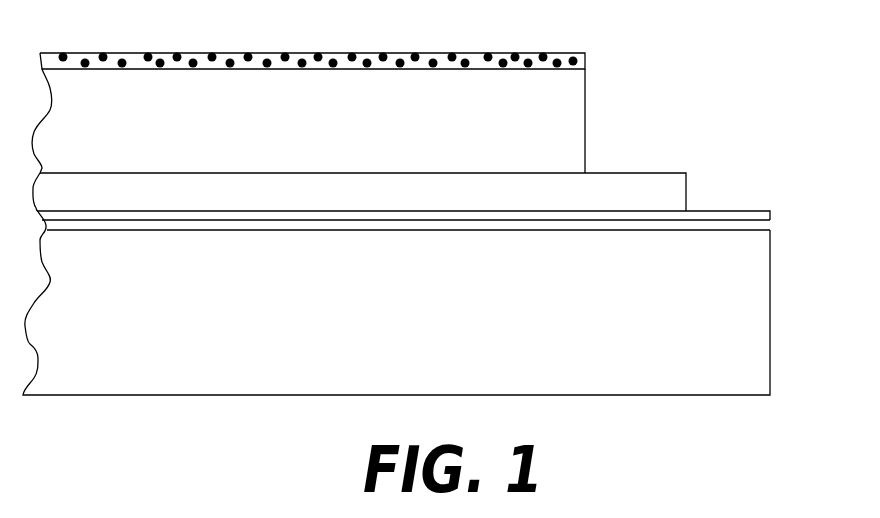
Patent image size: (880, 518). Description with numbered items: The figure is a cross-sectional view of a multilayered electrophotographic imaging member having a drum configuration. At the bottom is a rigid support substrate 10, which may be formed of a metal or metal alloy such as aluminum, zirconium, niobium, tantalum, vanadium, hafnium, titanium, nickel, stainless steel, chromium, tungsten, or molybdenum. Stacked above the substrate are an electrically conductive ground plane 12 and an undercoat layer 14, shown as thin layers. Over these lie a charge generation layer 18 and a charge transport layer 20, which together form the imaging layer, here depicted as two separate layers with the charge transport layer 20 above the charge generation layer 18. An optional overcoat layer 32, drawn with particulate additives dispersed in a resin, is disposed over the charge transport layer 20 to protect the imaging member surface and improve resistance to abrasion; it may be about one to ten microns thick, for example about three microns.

The rigid support substrate 10 is at (765, 337).
The electrically conductive ground plane 12 is at (768, 227).
The undercoat layer 14 is at (768, 220).
The charge generation layer 18 is at (683, 192).
The charge transport layer 20 is at (578, 125).
The overcoat layer 32 is at (585, 60).